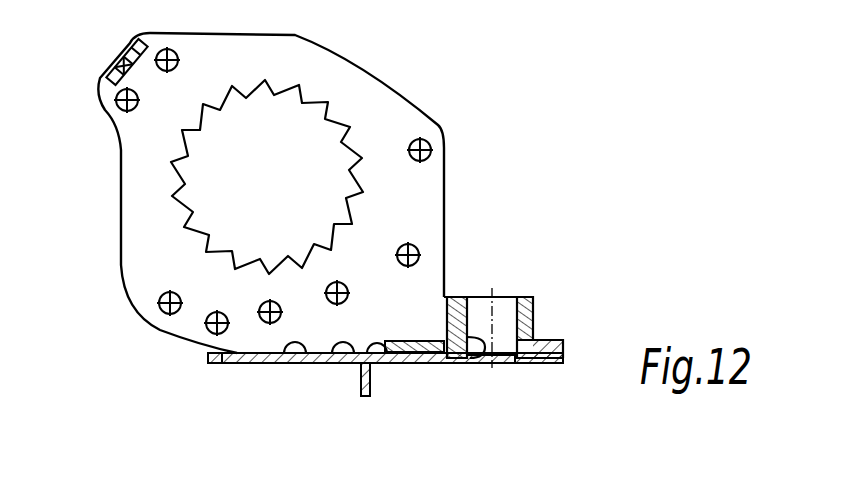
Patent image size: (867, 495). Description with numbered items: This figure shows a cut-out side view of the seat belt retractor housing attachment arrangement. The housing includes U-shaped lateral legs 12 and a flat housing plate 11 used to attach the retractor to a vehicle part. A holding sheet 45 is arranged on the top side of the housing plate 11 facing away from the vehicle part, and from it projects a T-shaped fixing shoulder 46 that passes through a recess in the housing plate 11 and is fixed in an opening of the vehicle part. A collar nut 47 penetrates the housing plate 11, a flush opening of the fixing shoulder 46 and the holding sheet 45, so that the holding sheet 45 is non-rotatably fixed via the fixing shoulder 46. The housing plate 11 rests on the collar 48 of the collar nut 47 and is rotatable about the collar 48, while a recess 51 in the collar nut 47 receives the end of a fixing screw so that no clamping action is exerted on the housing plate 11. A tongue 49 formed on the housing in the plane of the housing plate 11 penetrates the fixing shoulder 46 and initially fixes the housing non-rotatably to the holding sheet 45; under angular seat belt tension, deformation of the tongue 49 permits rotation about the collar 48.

The lateral legs 12 is at (345, 73).
The housing plate 11 is at (280, 357).
The tongue 49 is at (337, 360).
The fixing shoulder 46 is at (358, 396).
The collar nut 47 is at (530, 293).
The holding sheet 45 is at (547, 340).
The collar 48 is at (478, 358).
The recess 51 is at (520, 363).